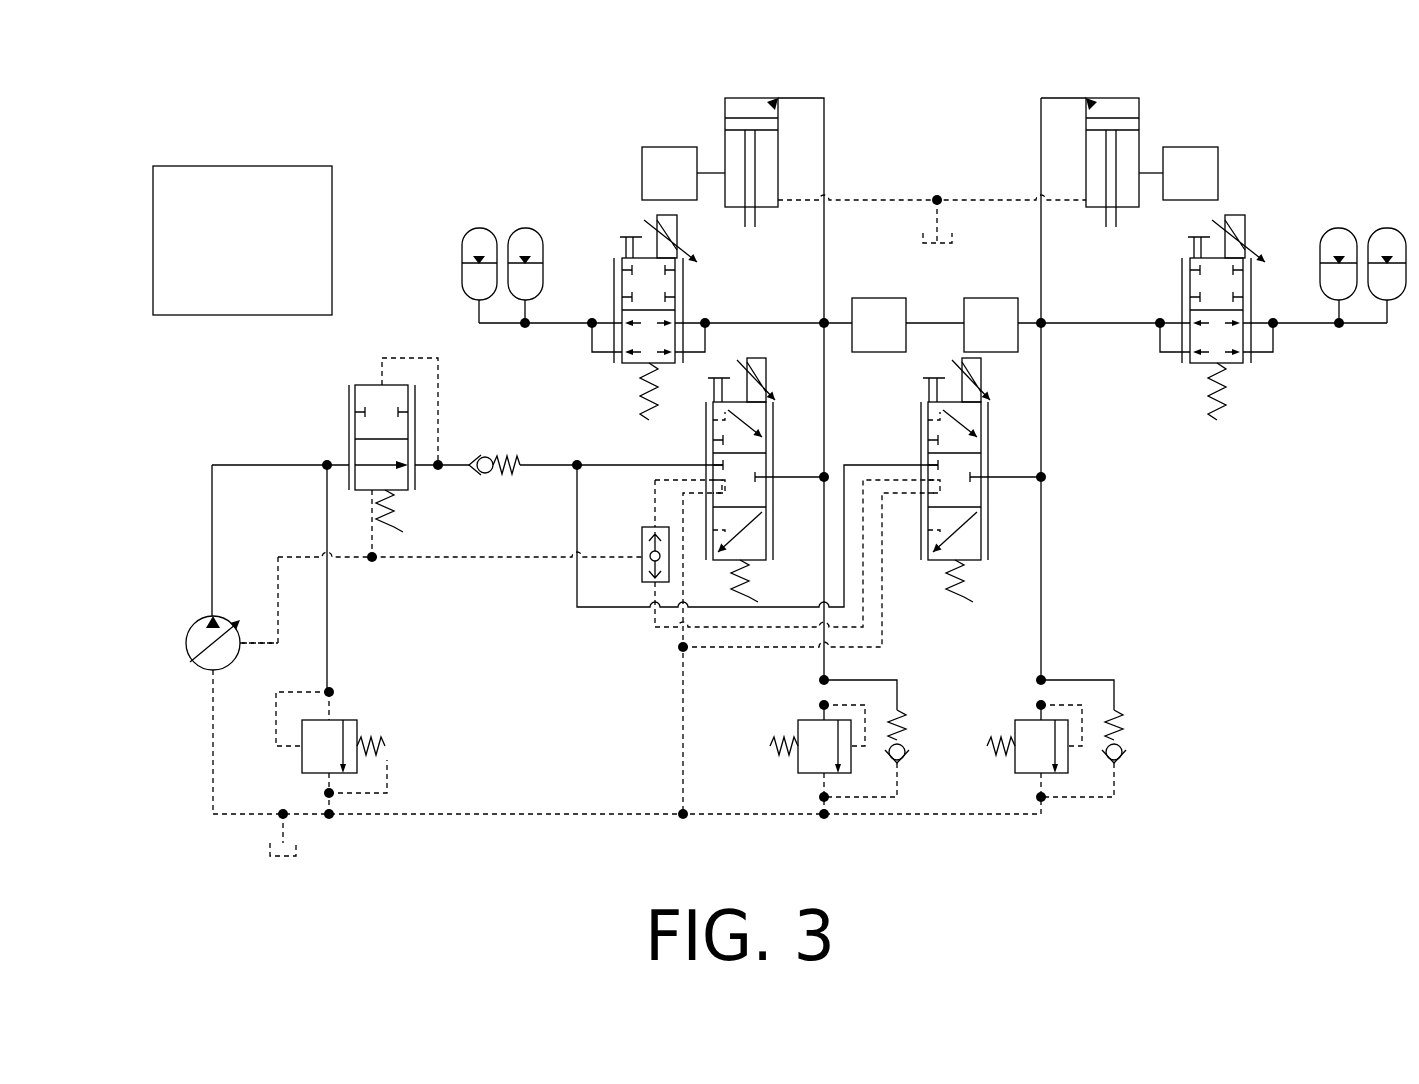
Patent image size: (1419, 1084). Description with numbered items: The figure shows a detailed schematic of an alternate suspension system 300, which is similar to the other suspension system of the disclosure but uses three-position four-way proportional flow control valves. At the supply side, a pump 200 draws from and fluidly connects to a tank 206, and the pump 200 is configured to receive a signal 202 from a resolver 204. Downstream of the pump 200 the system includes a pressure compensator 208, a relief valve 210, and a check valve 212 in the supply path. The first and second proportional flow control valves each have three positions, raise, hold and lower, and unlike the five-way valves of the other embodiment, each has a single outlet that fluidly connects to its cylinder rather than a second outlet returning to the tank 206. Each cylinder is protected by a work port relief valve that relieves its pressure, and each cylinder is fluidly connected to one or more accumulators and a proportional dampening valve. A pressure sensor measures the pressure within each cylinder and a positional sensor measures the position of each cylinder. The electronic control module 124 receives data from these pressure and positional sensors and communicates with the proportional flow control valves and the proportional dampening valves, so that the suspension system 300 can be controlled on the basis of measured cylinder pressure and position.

The suspension system 300 is at (184, 72).
The ECM 124 is at (242, 240).
The resolver 204 is at (635, 553).
The pressure compensator 208 is at (366, 457).
The check valve 212 is at (494, 444).
The pump 200 is at (189, 643).
The signal 202 is at (256, 646).
The relief valve 210 is at (339, 750).
The tank 206 is at (285, 853).